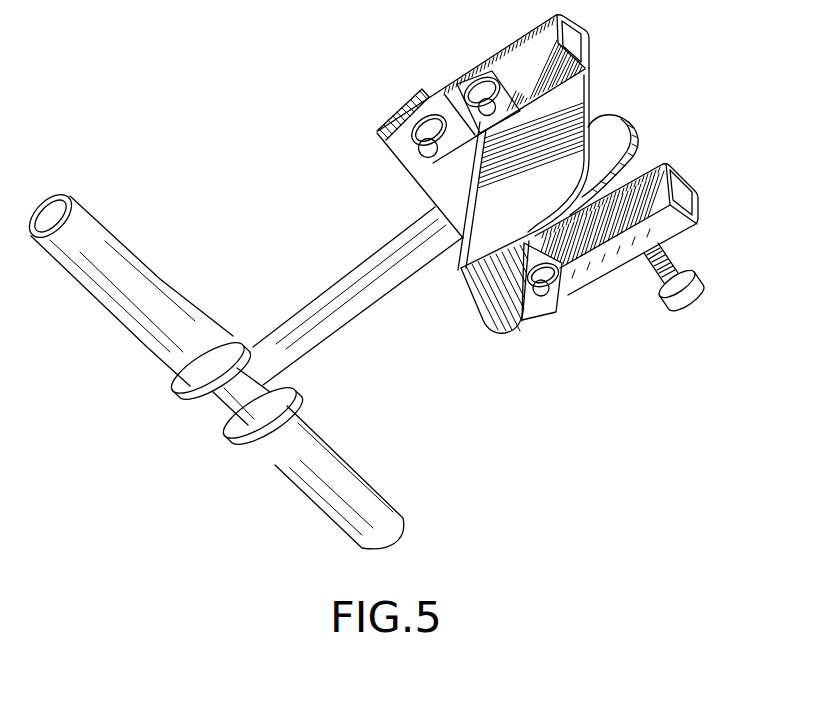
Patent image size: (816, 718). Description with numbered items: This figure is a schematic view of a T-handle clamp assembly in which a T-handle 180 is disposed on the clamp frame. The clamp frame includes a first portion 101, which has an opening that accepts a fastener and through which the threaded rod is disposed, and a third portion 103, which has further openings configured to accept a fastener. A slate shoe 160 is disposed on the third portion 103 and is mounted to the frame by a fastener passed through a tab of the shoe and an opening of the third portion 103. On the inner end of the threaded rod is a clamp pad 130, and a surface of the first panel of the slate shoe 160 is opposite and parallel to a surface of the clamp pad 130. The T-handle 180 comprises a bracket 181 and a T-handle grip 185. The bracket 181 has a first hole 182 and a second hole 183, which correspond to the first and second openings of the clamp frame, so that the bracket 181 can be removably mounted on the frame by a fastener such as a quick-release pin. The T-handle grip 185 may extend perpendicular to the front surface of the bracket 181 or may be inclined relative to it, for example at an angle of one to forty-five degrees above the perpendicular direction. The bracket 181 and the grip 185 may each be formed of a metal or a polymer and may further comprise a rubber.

The T-handle 180 is at (155, 90).
The third portion 103 is at (444, 86).
The slate shoe 160 is at (592, 71).
The clamp pad 130 is at (644, 132).
The second hole 183 is at (412, 144).
The bracket 181 is at (395, 166).
The T-handle grip 185 is at (147, 333).
The first hole 182 is at (542, 306).
The first portion 101 is at (607, 270).